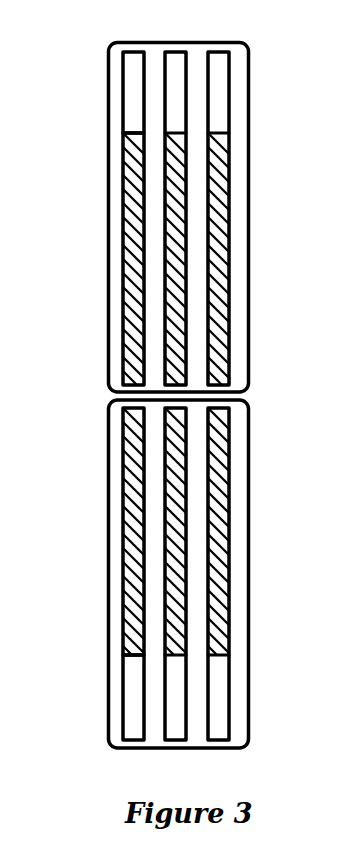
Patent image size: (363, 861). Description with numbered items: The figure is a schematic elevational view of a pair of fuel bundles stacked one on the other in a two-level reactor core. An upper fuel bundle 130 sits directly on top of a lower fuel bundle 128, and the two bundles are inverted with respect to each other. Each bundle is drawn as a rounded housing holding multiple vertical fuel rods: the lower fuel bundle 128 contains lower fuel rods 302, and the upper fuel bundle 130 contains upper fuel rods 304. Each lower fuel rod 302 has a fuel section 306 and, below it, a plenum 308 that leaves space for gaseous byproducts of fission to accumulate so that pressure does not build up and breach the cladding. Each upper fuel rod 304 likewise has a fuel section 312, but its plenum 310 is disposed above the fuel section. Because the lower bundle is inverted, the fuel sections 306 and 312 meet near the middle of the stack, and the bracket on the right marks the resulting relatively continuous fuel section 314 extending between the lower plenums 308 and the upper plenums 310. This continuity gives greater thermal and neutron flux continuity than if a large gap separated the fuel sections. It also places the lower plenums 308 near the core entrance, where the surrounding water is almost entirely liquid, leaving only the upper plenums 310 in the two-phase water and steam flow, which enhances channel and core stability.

The upper fuel bundle 130 is at (108, 245).
The lower fuel bundle 128 is at (108, 528).
The plenum 310 is at (133, 100).
The upper fuel rod 304 is at (125, 196).
The fuel section 312 is at (126, 312).
The fuel section 306 is at (128, 474).
The lower fuel rod 302 is at (126, 586).
The plenum 308 is at (131, 693).
The continuous fuel section 314 is at (262, 140).